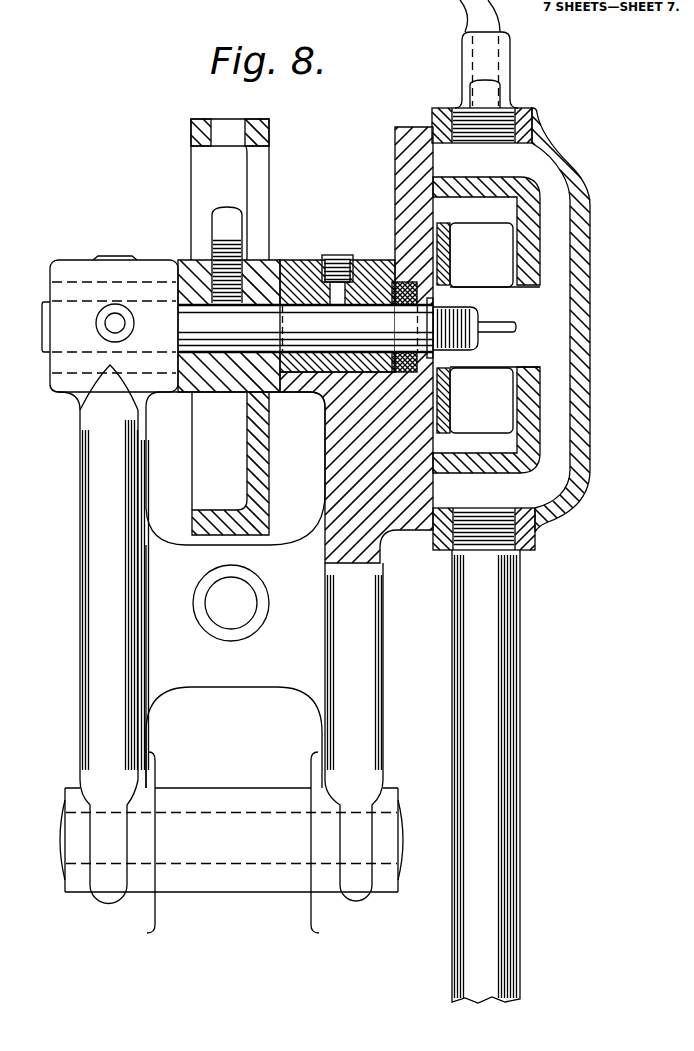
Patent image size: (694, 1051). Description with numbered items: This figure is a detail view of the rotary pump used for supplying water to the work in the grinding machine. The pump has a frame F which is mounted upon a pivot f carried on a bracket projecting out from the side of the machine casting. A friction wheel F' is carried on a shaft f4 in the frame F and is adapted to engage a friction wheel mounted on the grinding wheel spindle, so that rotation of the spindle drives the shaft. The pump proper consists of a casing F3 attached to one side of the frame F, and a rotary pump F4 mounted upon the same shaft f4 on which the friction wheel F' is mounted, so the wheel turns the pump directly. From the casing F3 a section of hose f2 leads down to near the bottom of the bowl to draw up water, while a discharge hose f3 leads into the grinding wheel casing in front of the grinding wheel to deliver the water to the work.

The frame F is at (231, 530).
The friction wheel F' is at (203, 327).
The casing F3 is at (531, 329).
The rotary pump F4 is at (475, 328).
The pivot f is at (62, 836).
The section of hose f2 is at (500, 828).
The discharge hose f3 is at (488, 22).
The shaft f4 is at (312, 318).